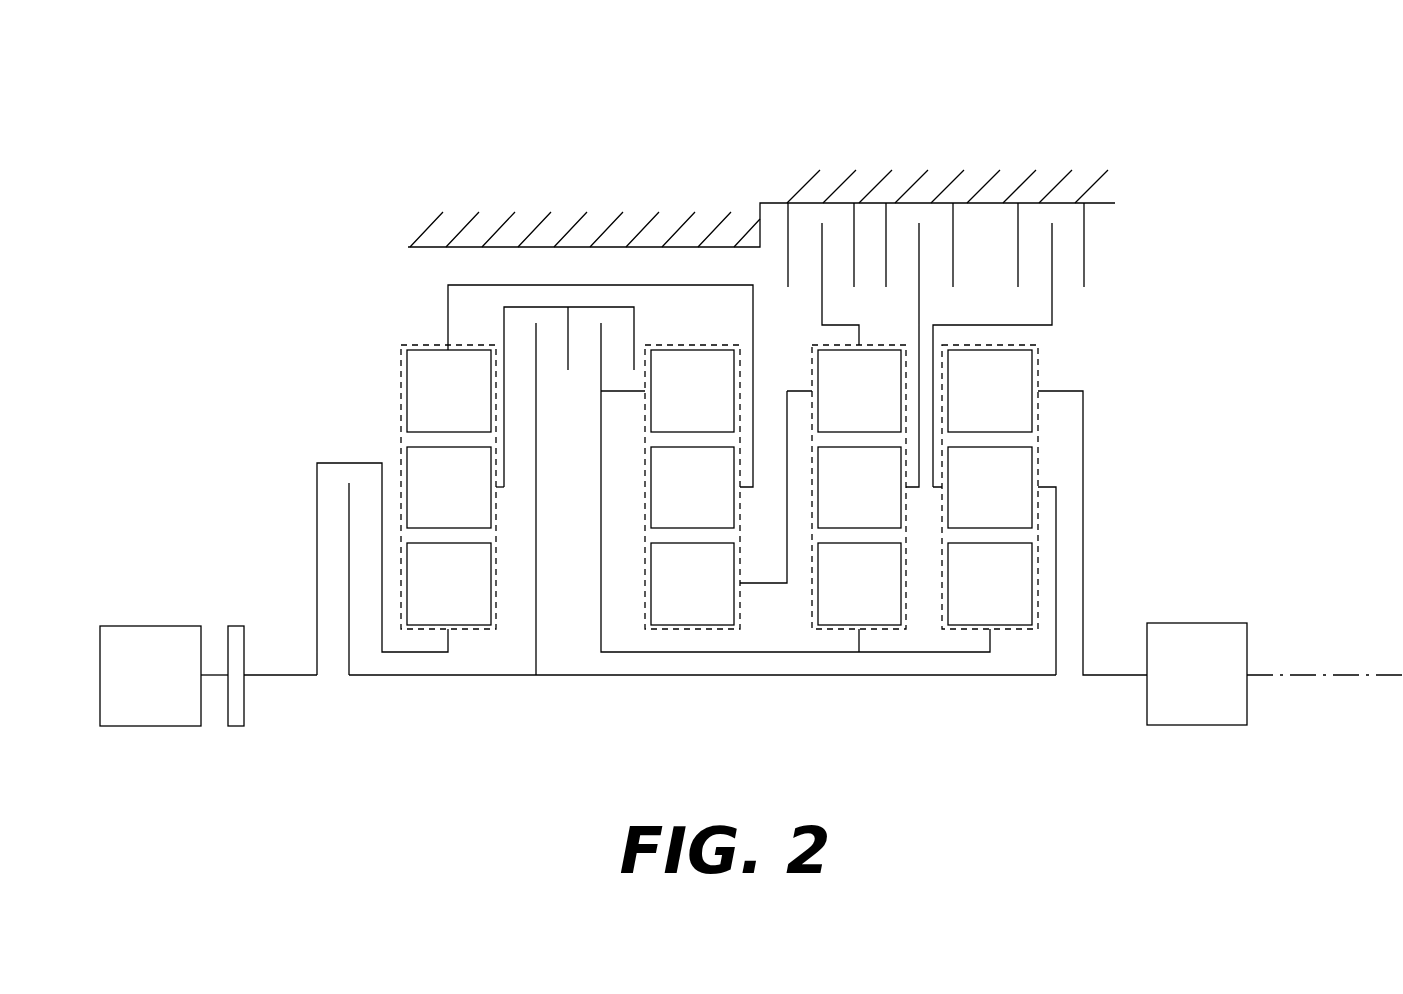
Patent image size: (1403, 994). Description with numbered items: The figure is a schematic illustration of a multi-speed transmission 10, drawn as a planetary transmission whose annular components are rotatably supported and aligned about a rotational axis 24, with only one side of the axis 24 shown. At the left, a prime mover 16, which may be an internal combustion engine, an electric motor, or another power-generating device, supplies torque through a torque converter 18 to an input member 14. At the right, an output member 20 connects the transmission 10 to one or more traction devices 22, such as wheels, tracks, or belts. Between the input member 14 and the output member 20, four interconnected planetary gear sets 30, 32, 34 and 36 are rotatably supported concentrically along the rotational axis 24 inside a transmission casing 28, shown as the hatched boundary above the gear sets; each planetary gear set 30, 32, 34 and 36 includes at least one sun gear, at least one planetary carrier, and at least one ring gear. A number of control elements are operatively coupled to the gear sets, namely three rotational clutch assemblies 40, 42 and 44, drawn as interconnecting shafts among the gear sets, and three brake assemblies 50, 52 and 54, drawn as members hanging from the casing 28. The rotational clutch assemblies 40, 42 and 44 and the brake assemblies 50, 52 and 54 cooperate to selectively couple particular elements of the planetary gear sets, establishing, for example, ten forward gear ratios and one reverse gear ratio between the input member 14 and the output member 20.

The multi-speed transmission 10 is at (372, 204).
The input member 14 is at (300, 672).
The prime mover 16 is at (150, 676).
The torque converter 18 is at (228, 627).
The output member 20 is at (1107, 672).
The traction devices 22 is at (1197, 674).
The rotational axis 24 is at (1297, 672).
The transmission casing 28 is at (912, 185).
The first planetary gear set 30 is at (401, 336).
The second planetary gear set 32 is at (654, 345).
The third planetary gear set 34 is at (802, 389).
The fourth planetary gear set 36 is at (1045, 358).
The rotational clutch assembly 40 is at (340, 462).
The rotational clutch assembly 42 is at (522, 307).
The rotational clutch assembly 44 is at (600, 307).
The brake assembly 50 is at (788, 210).
The brake assembly 52 is at (955, 235).
The brake assembly 54 is at (1083, 222).